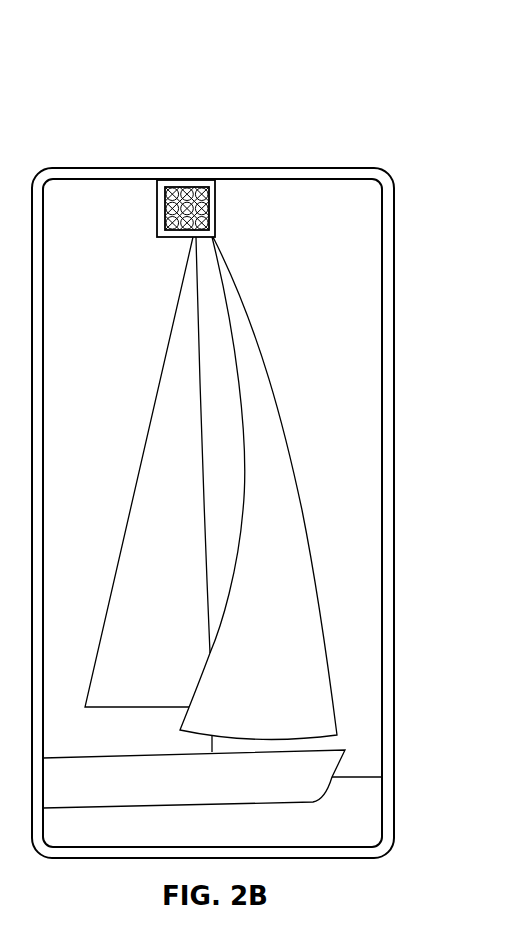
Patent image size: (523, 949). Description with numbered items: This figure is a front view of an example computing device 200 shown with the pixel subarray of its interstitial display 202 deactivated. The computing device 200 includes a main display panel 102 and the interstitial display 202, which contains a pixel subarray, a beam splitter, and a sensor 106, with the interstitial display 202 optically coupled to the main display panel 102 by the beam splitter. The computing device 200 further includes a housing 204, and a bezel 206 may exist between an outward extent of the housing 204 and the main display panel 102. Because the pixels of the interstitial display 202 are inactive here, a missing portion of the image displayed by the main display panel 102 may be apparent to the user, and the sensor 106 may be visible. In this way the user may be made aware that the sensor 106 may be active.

The computing device 200 is at (128, 70).
The interstitial display 202 is at (165, 182).
The sensor 106 is at (183, 198).
The housing 204 is at (210, 172).
The main display panel 102 is at (270, 197).
The bezel 206 is at (347, 172).